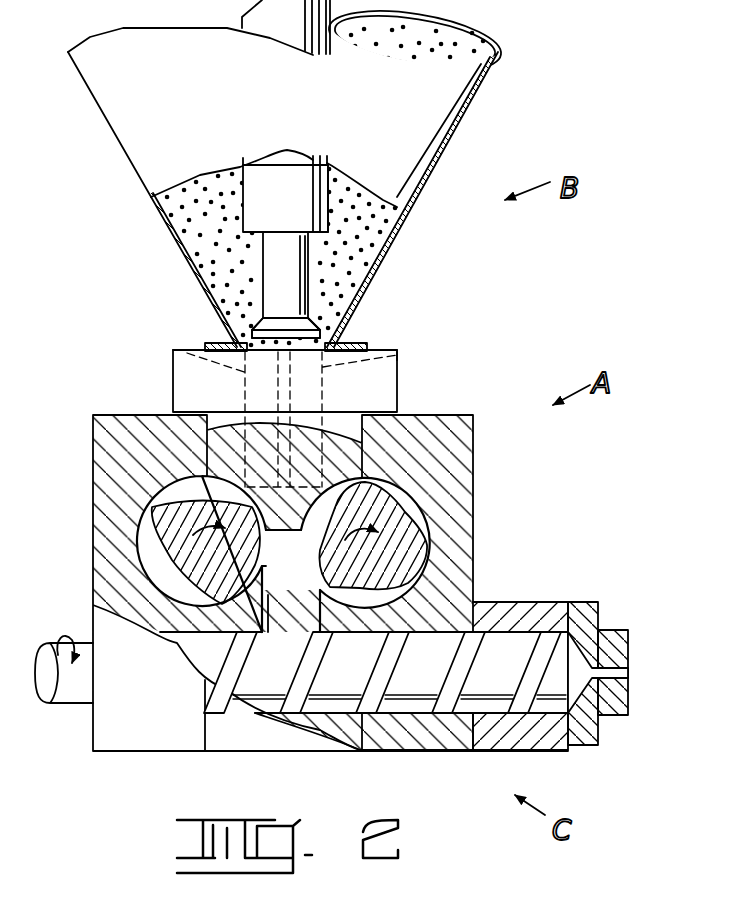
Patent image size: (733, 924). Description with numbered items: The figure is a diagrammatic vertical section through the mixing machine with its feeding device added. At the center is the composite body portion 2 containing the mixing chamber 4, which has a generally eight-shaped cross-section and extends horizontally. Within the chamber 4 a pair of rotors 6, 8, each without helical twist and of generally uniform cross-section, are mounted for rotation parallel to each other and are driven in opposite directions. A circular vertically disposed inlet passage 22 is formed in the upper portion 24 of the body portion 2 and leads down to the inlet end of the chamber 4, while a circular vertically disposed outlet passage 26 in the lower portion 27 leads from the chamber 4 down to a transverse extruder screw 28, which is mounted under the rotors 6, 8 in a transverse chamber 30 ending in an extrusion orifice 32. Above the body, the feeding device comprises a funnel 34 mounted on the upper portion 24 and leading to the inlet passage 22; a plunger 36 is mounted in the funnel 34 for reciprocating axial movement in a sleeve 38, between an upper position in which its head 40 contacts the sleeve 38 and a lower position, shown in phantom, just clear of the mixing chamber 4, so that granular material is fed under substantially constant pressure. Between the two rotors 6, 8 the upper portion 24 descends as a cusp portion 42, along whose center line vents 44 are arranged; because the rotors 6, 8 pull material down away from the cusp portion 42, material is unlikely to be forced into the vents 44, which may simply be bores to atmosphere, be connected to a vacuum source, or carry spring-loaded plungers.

The composite body portion 2 is at (463, 461).
The mixing chamber 4 is at (280, 553).
The rotor 6 is at (152, 515).
The rotor 8 is at (398, 548).
The inlet passage 22 is at (178, 351).
The upper portion 24 is at (397, 385).
The outlet passage 26 is at (300, 622).
The lower portion 27 is at (157, 623).
The extruder screw 28 is at (510, 653).
The transverse chamber 30 is at (390, 707).
The extrusion orifice 32 is at (610, 670).
The funnel 34 is at (135, 135).
The plunger 36 is at (273, 268).
The sleeve 38 is at (317, 213).
The head 40 is at (313, 327).
The cusp portion 42 is at (310, 522).
The vents 44 is at (397, 358).